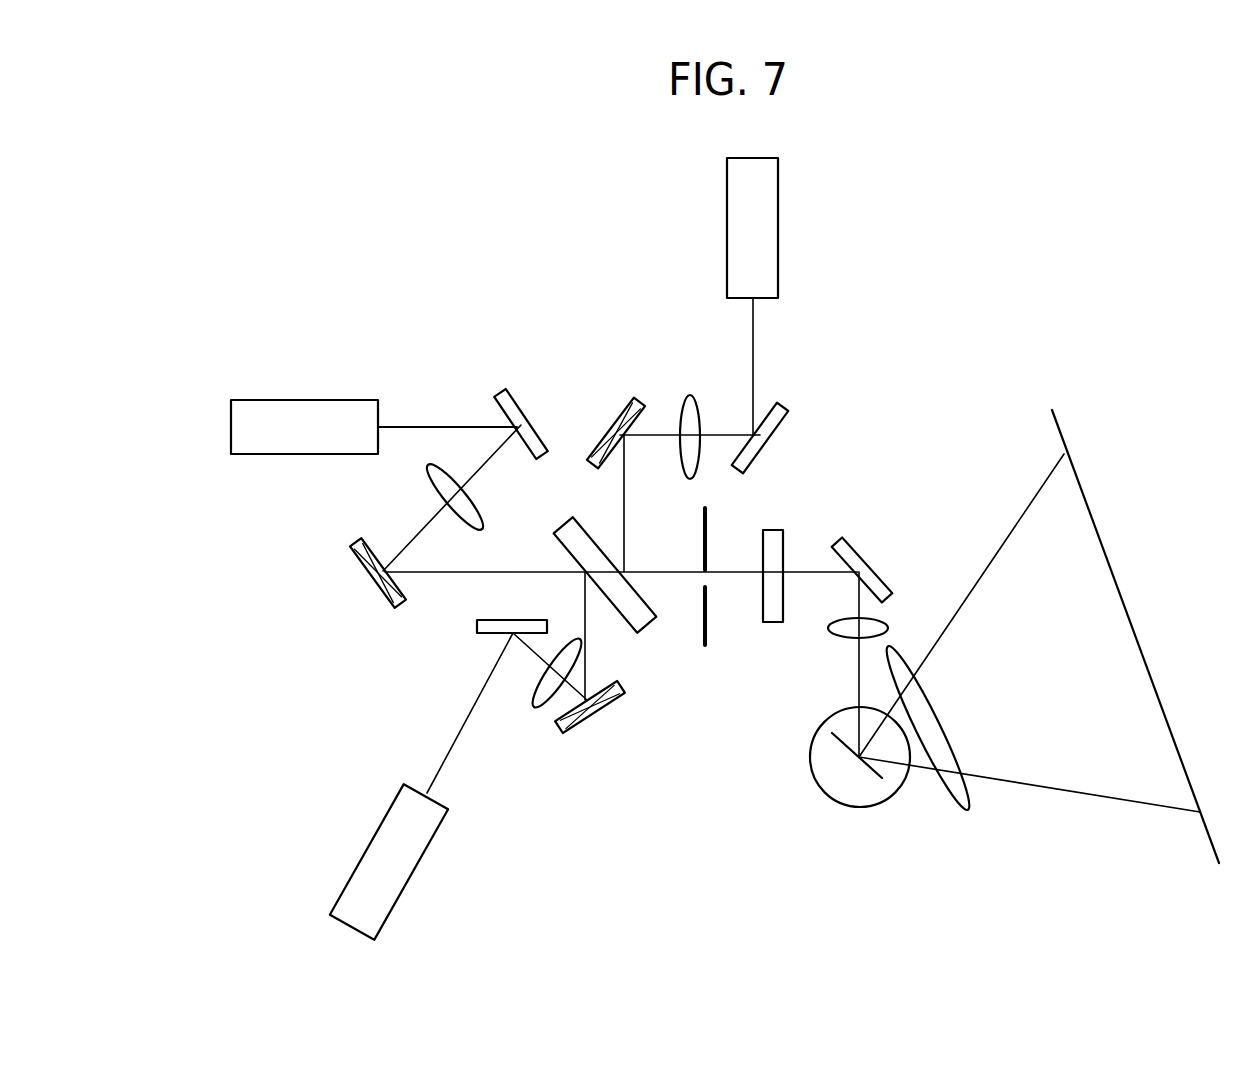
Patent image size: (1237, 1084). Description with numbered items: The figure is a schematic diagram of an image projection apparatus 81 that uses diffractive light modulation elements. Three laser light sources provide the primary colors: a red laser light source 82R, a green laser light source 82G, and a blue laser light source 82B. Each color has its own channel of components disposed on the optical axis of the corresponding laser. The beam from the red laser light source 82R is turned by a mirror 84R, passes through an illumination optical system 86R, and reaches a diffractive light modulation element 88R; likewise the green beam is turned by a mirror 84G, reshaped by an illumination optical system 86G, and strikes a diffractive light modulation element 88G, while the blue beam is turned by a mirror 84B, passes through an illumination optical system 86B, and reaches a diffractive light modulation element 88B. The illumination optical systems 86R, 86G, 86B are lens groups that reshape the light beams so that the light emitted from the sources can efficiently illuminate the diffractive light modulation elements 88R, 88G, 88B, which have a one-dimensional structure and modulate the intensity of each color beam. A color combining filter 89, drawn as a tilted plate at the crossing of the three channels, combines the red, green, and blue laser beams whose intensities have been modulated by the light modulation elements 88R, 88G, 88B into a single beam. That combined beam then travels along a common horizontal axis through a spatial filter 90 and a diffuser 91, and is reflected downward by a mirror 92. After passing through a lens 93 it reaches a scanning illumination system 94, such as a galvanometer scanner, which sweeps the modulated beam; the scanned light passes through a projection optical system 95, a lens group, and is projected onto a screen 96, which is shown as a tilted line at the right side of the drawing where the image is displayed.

The image projection apparatus 81 is at (201, 197).
The green laser light source 82G is at (312, 400).
The mirror 84G is at (502, 392).
The illumination optical system 86G is at (434, 488).
The diffractive light modulation element 88G is at (368, 586).
The red laser light source 82R is at (778, 229).
The mirror 84R is at (778, 434).
The illumination optical system 86R is at (690, 395).
The diffractive light modulation element 88R is at (631, 400).
The blue laser light source 82B is at (416, 873).
The mirror 84B is at (477, 629).
The illumination optical system 86B is at (533, 710).
The diffractive light modulation element 88B is at (595, 720).
The color combining filter 89 is at (655, 620).
The spatial filter 90 is at (707, 628).
The diffuser 91 is at (778, 622).
The mirror 92 is at (872, 560).
The lens 93 is at (888, 622).
The scanning illumination system 94 is at (862, 808).
The projection optical system 95 is at (967, 812).
The screen 96 is at (1099, 536).